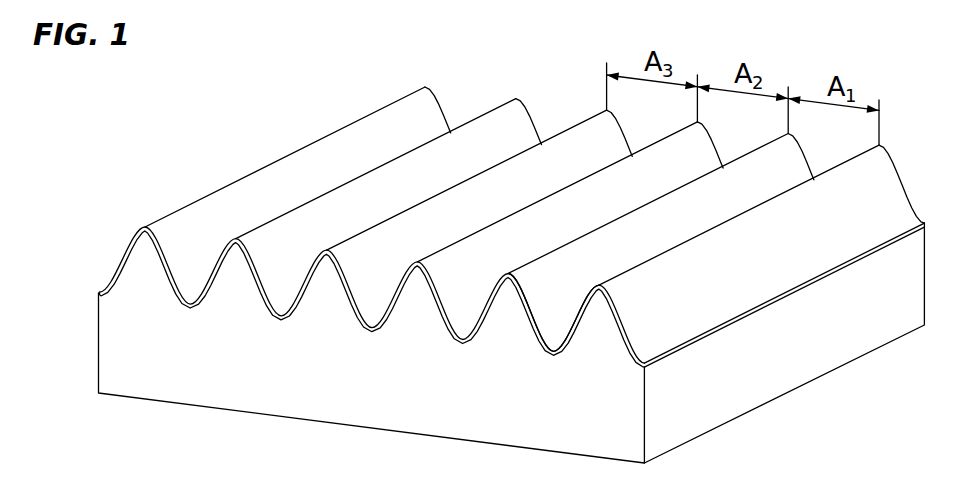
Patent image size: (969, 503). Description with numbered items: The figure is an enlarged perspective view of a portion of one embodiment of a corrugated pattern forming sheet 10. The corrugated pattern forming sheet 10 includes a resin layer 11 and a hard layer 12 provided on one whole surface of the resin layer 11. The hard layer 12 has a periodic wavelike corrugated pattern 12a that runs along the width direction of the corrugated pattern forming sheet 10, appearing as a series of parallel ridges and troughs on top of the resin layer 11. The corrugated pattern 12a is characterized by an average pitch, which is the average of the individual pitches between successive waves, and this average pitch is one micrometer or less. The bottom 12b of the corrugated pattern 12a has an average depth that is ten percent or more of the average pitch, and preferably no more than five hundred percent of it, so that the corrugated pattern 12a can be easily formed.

The corrugated pattern forming sheet 10 is at (312, 113).
The resin layer 11 is at (238, 393).
The hard layer 12 is at (110, 282).
The corrugated pattern 12a is at (577, 118).
The bottom 12b is at (553, 355).